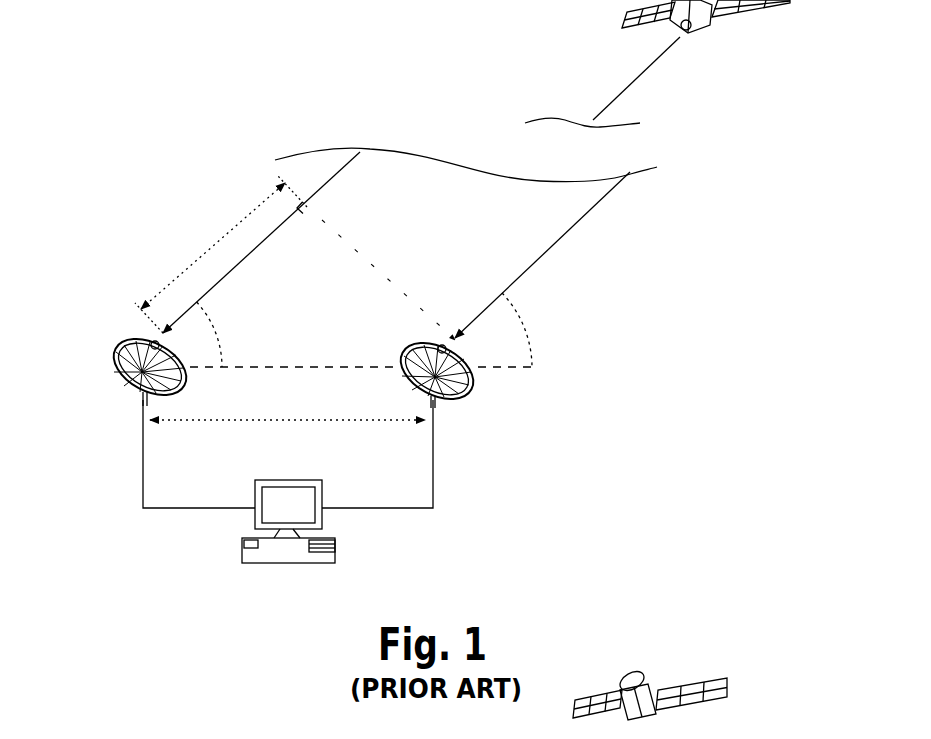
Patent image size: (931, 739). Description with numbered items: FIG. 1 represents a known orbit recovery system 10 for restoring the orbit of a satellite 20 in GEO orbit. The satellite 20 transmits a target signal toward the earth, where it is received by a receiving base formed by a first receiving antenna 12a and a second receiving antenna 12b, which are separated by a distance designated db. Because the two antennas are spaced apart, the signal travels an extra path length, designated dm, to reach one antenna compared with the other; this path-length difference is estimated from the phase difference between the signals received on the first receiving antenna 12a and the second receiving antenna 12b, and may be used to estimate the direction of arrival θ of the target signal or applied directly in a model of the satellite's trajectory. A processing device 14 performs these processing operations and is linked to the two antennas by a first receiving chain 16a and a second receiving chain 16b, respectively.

The orbit recovery system 10 is at (590, 310).
The first receiving antenna 12a is at (117, 374).
The second receiving antenna 12b is at (477, 378).
The processing device 14 is at (323, 522).
The first receiving chain 16a is at (142, 498).
The second receiving chain 16b is at (435, 498).
The satellite 20 is at (707, 30).